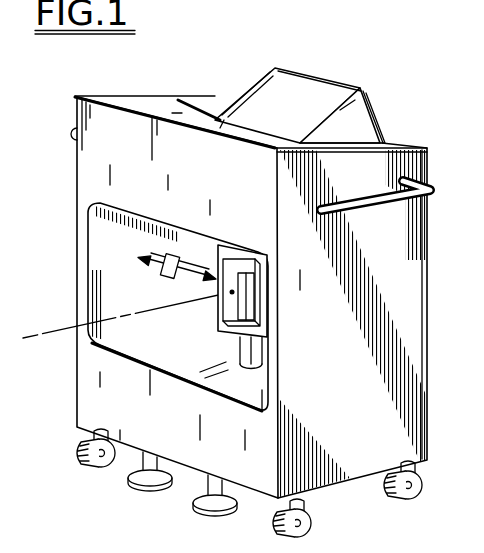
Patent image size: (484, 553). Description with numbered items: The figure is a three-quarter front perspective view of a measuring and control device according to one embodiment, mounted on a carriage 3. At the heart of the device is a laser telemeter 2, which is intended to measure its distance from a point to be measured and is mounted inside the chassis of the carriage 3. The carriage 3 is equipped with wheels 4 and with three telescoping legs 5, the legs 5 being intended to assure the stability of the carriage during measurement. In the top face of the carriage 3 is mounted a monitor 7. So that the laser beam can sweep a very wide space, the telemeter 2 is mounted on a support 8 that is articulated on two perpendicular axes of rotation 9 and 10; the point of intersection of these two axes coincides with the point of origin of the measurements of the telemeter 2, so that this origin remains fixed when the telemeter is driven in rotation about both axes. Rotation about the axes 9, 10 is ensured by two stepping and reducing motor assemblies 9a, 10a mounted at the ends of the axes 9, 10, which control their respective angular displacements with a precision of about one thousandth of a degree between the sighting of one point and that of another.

The laser telemeter 2 is at (229, 311).
The carriage 3 is at (86, 380).
The wheels 4 is at (360, 521).
The telescoping legs 5 is at (194, 503).
The monitor 7 is at (368, 101).
The support 8 is at (270, 292).
The axis of rotation 9 is at (263, 350).
The stepping and reducing motor assembly 9a is at (257, 368).
The axis of rotation 10 is at (198, 266).
The stepping and reducing motor assembly 10a is at (154, 262).